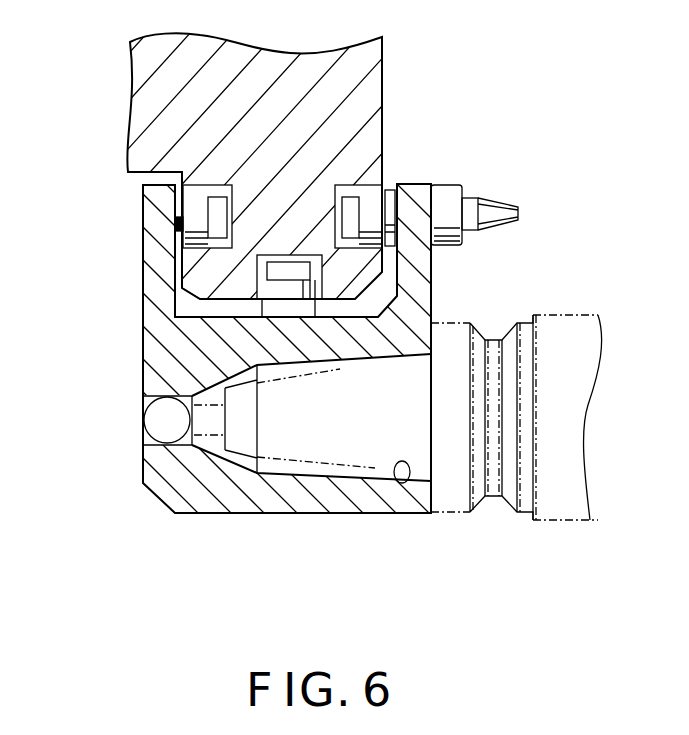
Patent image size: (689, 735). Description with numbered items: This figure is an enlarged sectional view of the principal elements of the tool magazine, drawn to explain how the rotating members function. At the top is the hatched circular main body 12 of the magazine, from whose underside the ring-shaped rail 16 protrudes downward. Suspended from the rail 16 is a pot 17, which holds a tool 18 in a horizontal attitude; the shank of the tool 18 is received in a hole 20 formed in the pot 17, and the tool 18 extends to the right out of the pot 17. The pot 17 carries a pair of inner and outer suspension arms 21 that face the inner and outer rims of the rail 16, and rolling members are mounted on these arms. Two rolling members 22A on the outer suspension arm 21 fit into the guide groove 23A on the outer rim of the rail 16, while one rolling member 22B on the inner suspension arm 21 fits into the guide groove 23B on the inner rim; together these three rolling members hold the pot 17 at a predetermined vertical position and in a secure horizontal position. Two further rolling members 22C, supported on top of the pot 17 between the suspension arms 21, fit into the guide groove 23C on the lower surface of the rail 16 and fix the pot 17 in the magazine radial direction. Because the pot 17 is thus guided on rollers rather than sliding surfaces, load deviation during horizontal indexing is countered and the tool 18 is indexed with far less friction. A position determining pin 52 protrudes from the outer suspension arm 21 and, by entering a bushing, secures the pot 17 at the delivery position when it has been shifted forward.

The main body 12 is at (148, 91).
The rail 16 is at (200, 292).
The pot 17 is at (266, 514).
The tool 18 is at (555, 512).
The hole 20 is at (393, 468).
The suspension arm 21 is at (150, 262).
The rolling member 22A is at (386, 205).
The rolling member 22B is at (176, 218).
The rolling member 22C is at (300, 290).
The guide groove 23A is at (375, 198).
The guide groove 23B is at (163, 172).
The guide groove 23C is at (274, 285).
The position determining pin 52 is at (518, 210).